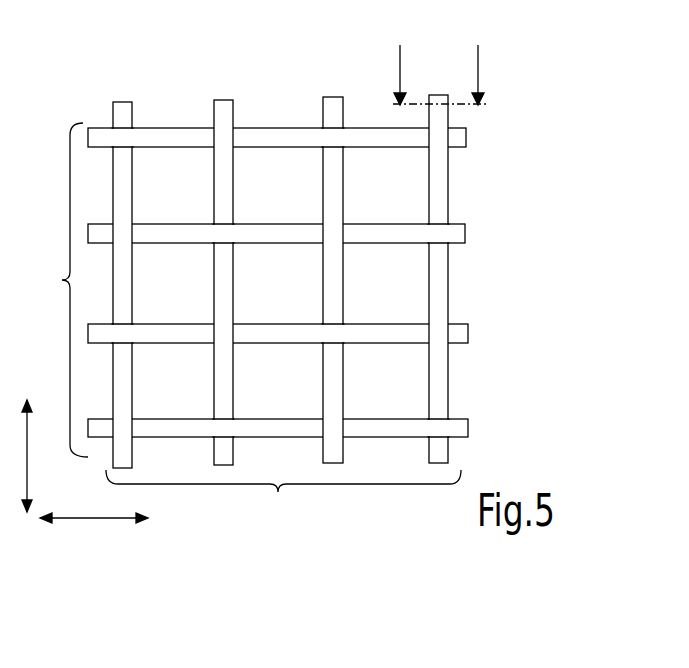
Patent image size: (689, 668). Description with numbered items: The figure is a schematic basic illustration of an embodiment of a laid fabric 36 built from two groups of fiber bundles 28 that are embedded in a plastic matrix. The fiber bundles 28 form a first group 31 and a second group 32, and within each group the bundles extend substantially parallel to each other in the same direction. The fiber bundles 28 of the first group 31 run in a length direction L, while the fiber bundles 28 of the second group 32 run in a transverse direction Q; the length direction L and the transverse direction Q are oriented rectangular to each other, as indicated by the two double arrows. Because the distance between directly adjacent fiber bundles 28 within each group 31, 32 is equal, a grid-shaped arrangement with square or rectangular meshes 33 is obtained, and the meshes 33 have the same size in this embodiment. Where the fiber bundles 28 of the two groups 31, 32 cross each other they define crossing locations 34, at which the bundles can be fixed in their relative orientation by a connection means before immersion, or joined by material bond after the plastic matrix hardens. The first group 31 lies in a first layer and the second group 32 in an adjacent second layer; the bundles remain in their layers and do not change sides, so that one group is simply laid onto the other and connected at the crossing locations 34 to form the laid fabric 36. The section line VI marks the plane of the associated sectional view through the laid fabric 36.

The fiber bundle 28 is at (124, 118).
The first group 31 is at (283, 498).
The second group 32 is at (64, 290).
The mesh 33 is at (388, 186).
The crossing location 34 is at (328, 137).
The laid fabric 36 is at (339, 240).
The section line VI- VI is at (422, 37).
The length direction L is at (27, 449).
The transverse direction Q is at (98, 518).